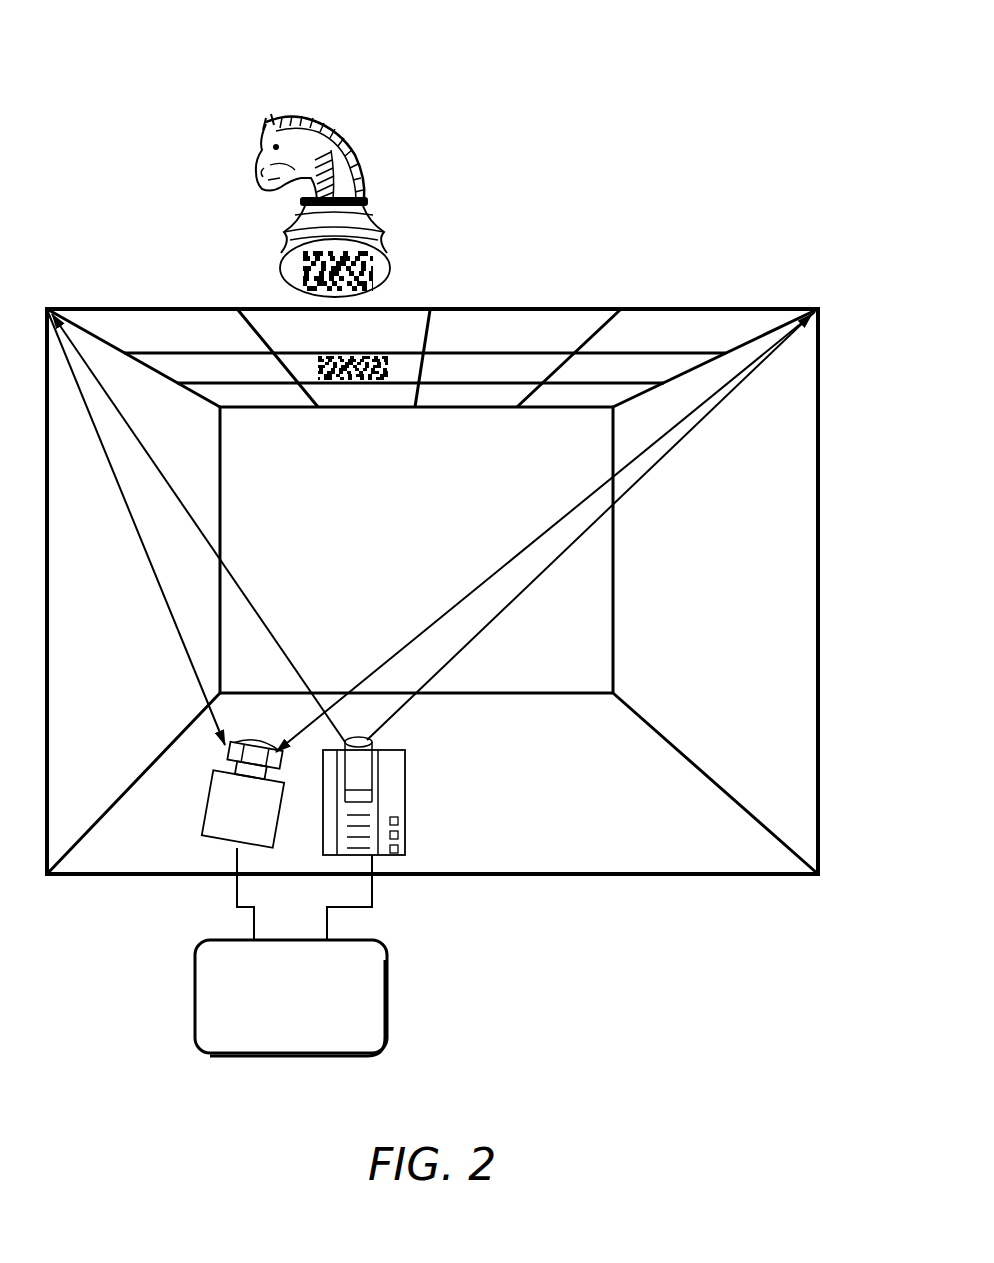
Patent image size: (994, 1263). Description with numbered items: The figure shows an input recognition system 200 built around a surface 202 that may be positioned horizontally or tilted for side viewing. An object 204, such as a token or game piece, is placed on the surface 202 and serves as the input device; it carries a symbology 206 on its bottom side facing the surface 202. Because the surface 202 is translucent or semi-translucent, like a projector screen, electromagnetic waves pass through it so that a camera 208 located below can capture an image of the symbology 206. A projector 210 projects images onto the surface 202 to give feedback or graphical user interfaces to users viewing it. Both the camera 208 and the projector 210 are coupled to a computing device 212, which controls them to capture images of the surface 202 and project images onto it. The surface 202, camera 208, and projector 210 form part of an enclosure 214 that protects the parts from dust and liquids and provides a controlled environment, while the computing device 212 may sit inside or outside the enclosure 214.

The input recognition system 200 is at (670, 96).
The surface 202 is at (617, 306).
The object 204 is at (262, 163).
The symbology 206 is at (365, 356).
The camera 208 is at (203, 842).
The projector 210 is at (405, 797).
The computing device 212 is at (271, 1041).
The enclosure 214 is at (713, 861).